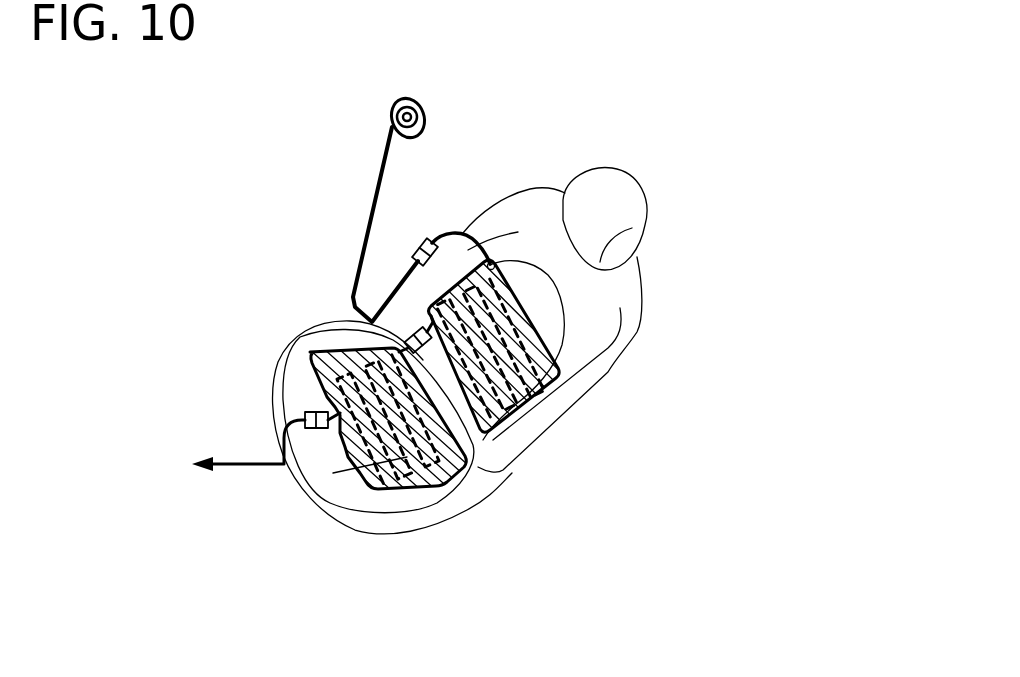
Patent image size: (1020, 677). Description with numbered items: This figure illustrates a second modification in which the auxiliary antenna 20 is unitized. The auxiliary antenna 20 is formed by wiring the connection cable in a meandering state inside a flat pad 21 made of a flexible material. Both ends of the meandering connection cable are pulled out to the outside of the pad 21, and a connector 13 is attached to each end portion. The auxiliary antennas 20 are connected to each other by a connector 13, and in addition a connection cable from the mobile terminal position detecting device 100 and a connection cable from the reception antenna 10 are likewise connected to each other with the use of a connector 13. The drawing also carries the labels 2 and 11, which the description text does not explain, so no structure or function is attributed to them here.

The seat (2a, 2b) 2 is at (607, 368).
The reception antenna 10 is at (425, 104).
The electrode 11 is at (606, 572).
The connector 13 is at (417, 245).
The auxiliary antenna 20 is at (438, 426).
The pad 21 is at (547, 428).
The mobile terminal position detecting device 100 is at (203, 450).